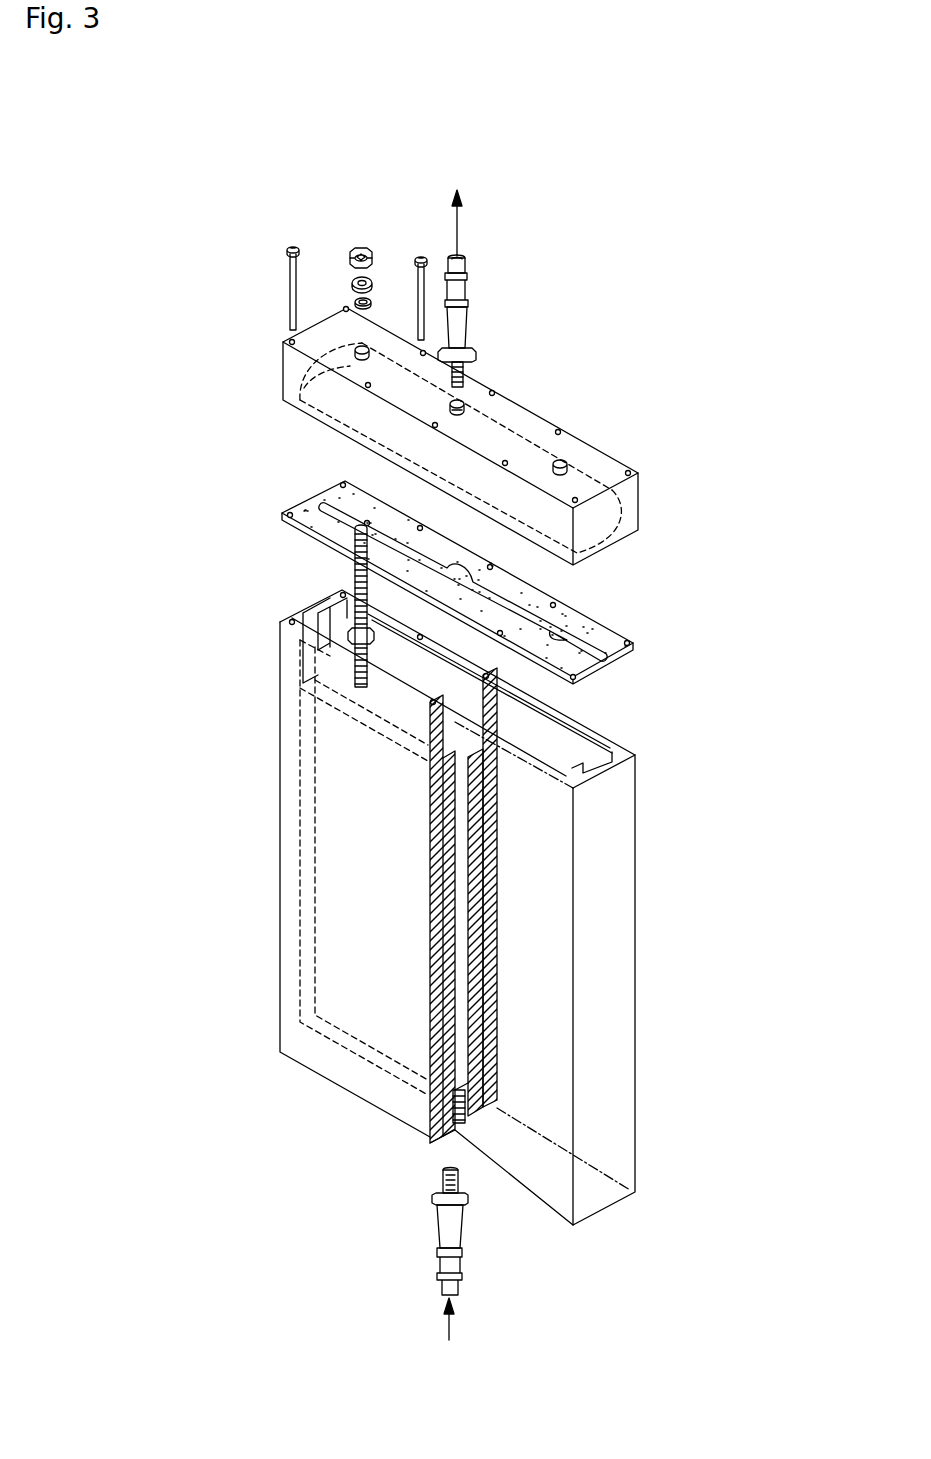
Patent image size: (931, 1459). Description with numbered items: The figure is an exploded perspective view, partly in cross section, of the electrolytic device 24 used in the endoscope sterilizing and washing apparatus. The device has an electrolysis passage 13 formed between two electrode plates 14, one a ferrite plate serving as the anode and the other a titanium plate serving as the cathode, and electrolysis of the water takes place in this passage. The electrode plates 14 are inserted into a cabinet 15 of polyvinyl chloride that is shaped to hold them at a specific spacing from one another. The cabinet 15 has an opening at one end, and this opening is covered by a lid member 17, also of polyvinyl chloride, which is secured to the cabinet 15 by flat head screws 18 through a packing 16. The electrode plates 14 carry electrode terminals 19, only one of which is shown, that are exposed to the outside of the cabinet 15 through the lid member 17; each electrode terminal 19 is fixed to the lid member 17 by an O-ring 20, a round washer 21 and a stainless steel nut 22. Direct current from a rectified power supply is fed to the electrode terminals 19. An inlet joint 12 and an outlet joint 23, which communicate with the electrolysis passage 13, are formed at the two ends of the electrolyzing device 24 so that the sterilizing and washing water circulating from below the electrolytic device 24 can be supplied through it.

The inlet joint 12 is at (455, 1232).
The electrolysis passage 13 is at (460, 1052).
The electrode plates 14 is at (487, 905).
The cabinet 15 is at (283, 1003).
The packing 16 is at (628, 637).
The lid member 17 is at (636, 507).
The flat head screws 18 is at (289, 297).
The electrode terminal 19 is at (353, 578).
The O-ring 20 is at (373, 299).
The round washer 21 is at (353, 282).
The stainless steel nut 22 is at (360, 246).
The outlet joint 23 is at (463, 324).
The electrolytic device 24 is at (188, 588).